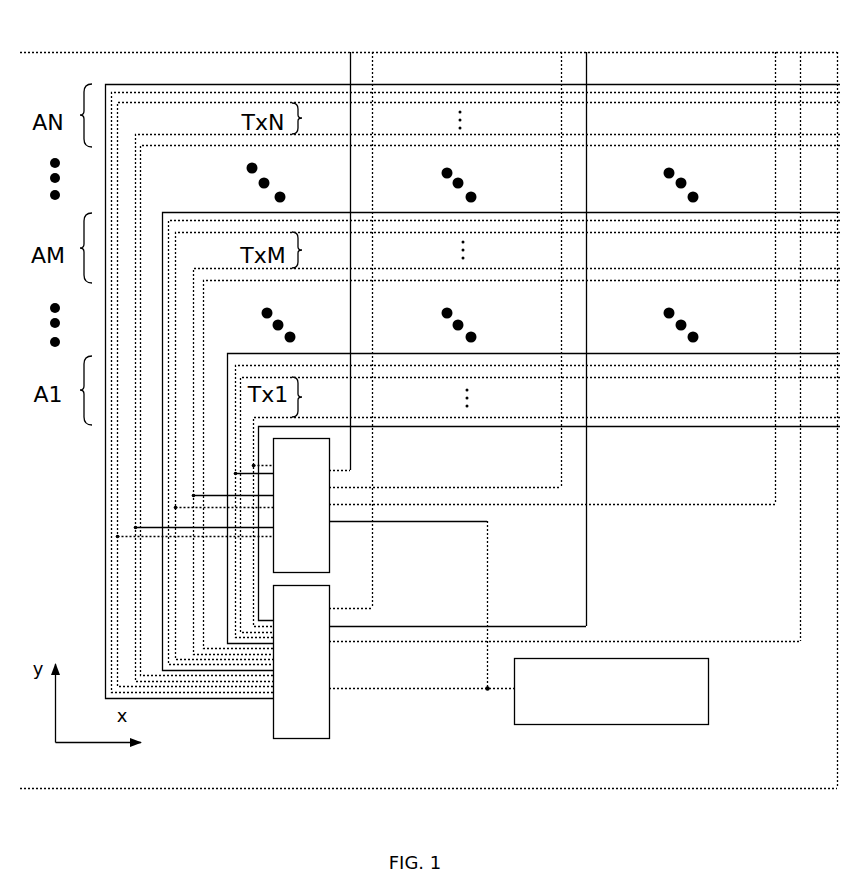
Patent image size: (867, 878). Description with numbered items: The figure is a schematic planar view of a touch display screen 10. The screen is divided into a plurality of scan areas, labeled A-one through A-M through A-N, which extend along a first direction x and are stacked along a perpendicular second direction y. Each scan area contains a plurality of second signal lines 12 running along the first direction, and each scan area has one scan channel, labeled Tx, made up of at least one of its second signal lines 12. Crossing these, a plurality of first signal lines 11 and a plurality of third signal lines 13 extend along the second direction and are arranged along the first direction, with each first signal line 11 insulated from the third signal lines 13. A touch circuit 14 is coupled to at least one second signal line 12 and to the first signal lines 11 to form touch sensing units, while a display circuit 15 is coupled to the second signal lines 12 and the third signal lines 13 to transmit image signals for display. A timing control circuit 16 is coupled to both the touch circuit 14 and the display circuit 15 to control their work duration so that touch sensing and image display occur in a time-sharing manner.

The touch display screen 10 is at (392, 52).
The first signal line 11 is at (345, 172).
The second signal line 12 is at (182, 203).
The third signal line 13 is at (376, 199).
The touch circuit 14 is at (333, 545).
The display circuit 15 is at (333, 714).
The timing control circuit 16 is at (711, 697).